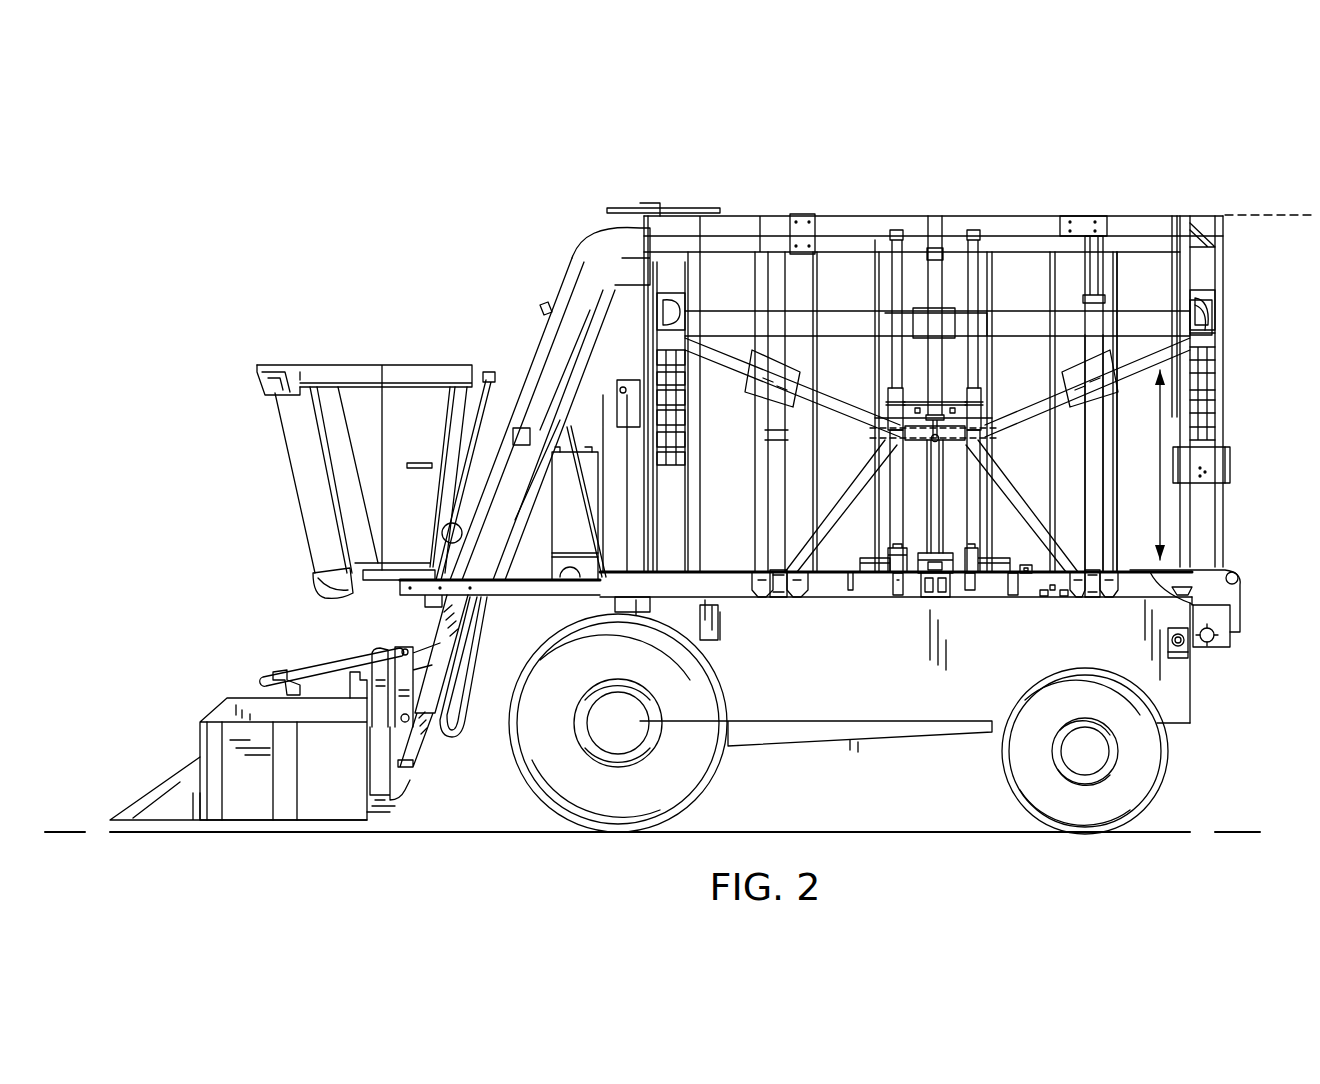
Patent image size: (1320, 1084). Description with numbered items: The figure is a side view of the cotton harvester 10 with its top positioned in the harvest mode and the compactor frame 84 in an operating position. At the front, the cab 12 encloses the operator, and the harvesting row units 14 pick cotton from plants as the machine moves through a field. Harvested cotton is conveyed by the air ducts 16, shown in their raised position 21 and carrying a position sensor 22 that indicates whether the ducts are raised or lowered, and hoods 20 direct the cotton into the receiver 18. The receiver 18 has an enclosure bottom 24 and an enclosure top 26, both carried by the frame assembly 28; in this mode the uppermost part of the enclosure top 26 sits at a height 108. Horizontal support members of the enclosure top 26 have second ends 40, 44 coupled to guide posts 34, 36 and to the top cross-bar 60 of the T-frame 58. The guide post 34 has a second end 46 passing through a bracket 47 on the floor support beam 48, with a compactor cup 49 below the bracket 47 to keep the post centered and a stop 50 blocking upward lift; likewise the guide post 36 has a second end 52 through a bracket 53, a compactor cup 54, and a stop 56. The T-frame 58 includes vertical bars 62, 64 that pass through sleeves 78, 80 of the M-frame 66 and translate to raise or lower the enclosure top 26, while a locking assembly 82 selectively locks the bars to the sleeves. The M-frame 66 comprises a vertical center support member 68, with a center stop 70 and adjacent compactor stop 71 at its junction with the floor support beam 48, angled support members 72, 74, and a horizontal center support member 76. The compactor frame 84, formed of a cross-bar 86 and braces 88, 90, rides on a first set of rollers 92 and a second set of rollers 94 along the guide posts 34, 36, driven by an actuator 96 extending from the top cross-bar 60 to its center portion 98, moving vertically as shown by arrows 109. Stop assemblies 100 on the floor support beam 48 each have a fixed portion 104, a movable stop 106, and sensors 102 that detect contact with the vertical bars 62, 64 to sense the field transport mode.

The harvester 10 is at (283, 220).
The cab 12 is at (305, 480).
The harvesting row units 14 is at (215, 703).
The air ducts 16 is at (555, 322).
The receiver 18 is at (1245, 193).
The hoods 20 is at (597, 250).
The raised position 21 is at (528, 270).
The position sensor 22 is at (488, 372).
The enclosure bottom 24 is at (1195, 545).
The enclosure top 26 is at (745, 214).
The frame assembly 28 is at (1112, 427).
The guide post 34 is at (775, 493).
The guide post 36 is at (1095, 525).
The second end 40 is at (792, 215).
The second end 44 is at (1080, 215).
The second end 46 is at (773, 596).
The bracket 47 is at (738, 572).
The floor support beam 48 is at (674, 600).
The compactor cup 49 is at (762, 590).
The stop 50 is at (795, 592).
The second end 52 is at (1092, 598).
The bracket 53 is at (1060, 596).
The compactor cup 54 is at (1077, 594).
The stop 56 is at (1110, 594).
The T-frame 58 is at (1010, 256).
The top cross-bar 60 is at (1013, 225).
The vertical bar 62 is at (897, 260).
The vertical bar 64 is at (968, 250).
The M-frame 66 is at (903, 508).
The vertical center support member 68 is at (944, 505).
The center stop 70 is at (940, 598).
The compactor stop 71 is at (928, 592).
The angled support member 72 is at (838, 475).
The angled support member 74 is at (1085, 505).
The horizontal center support member 76 is at (912, 445).
The sleeve 78 is at (893, 400).
The sleeve 80 is at (980, 400).
The locking assembly 82 is at (910, 395).
The compactor frame 84 is at (1040, 430).
The cross-bar 86 is at (1165, 325).
The brace 88 is at (748, 350).
The brace 90 is at (1125, 355).
The first set of rollers 92 is at (790, 300).
The second set of rollers 94 is at (1090, 320).
The actuator 96 is at (940, 365).
The center portion 98 is at (955, 445).
The stop assemblies 100 is at (845, 592).
The sensors 102 is at (895, 545).
The fixed portion 104 is at (870, 557).
The movable stop 106 is at (895, 575).
The height 108 is at (1270, 217).
The arrows 109 is at (1230, 460).